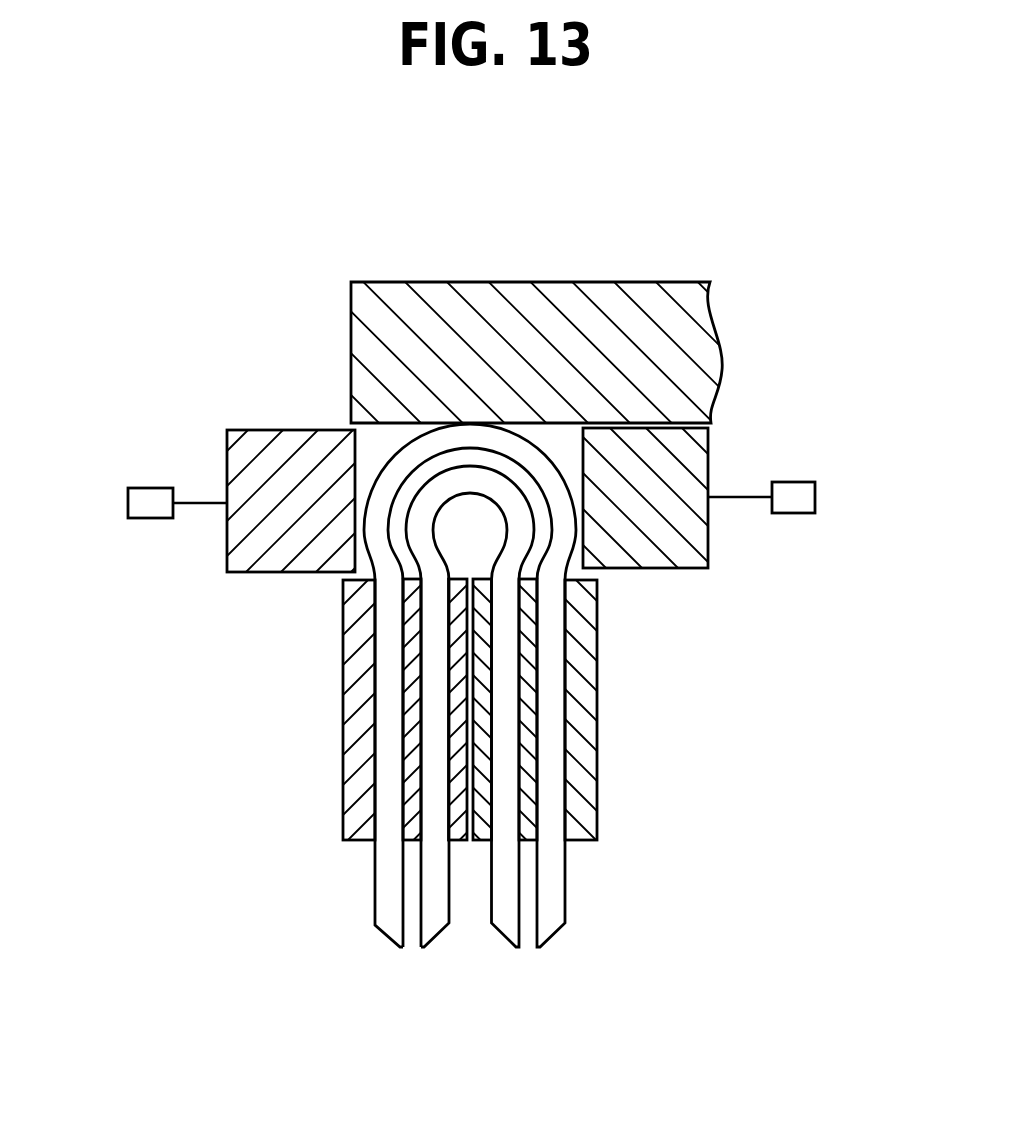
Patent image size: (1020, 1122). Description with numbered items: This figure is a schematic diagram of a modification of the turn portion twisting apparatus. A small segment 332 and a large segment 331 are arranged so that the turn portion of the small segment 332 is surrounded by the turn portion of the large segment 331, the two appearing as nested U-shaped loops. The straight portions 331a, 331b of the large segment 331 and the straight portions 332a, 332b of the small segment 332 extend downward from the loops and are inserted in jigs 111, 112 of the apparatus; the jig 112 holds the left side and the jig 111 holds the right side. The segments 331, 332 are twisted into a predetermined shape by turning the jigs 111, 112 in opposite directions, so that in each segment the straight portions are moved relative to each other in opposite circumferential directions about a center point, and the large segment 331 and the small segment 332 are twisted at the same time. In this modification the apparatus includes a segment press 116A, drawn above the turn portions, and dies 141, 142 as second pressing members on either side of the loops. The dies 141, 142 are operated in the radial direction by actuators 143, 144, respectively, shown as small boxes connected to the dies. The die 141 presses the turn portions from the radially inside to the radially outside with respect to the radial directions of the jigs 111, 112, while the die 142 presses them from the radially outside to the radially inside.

The segment press 116A is at (647, 292).
The die 142 is at (233, 432).
The actuator 144 is at (147, 493).
The die 141 is at (697, 438).
The actuator 143 is at (793, 503).
The straight portion 331b is at (387, 617).
The straight portion 332b is at (433, 677).
The jig 112 is at (360, 718).
The straight portion 331a is at (552, 615).
The straight portion 332a is at (507, 670).
The jig 111 is at (582, 752).
The large segment 331 is at (476, 744).
The small segment 332 is at (477, 765).